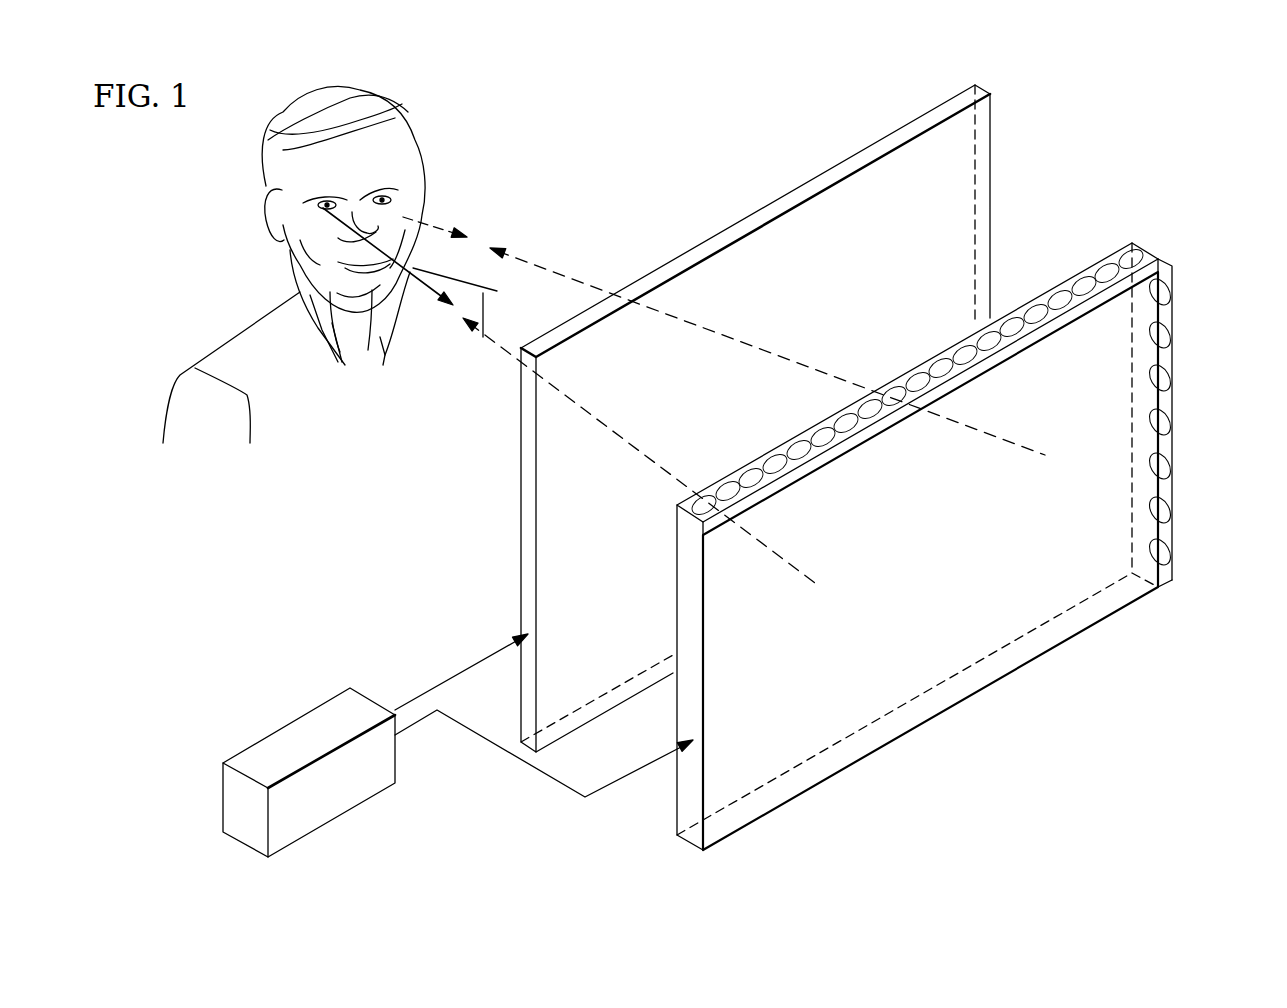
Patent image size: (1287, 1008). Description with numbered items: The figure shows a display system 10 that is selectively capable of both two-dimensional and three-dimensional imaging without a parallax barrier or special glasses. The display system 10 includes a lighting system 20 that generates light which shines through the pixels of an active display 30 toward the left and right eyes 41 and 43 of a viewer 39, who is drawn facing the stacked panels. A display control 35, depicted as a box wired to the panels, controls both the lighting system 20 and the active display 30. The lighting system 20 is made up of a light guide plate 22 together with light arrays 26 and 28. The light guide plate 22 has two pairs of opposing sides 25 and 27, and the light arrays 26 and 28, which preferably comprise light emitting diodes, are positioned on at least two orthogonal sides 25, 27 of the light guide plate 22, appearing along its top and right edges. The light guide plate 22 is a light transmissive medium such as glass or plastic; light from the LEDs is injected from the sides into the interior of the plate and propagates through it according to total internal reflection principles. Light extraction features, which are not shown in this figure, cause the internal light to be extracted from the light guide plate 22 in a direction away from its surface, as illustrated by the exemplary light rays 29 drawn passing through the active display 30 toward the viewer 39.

The display system 10 is at (1106, 116).
The lighting system 20 is at (1078, 652).
The light guide plate 22 is at (948, 577).
The side 25 is at (1165, 568).
The light array 26 is at (1172, 351).
The side 27 is at (1116, 270).
The light array 28 is at (1150, 252).
The light rays 29 is at (765, 348).
The active display 30 is at (751, 216).
The display control 35 is at (283, 743).
The viewer 39 is at (262, 308).
The left eye 41 is at (398, 200).
The right eye 43 is at (322, 212).